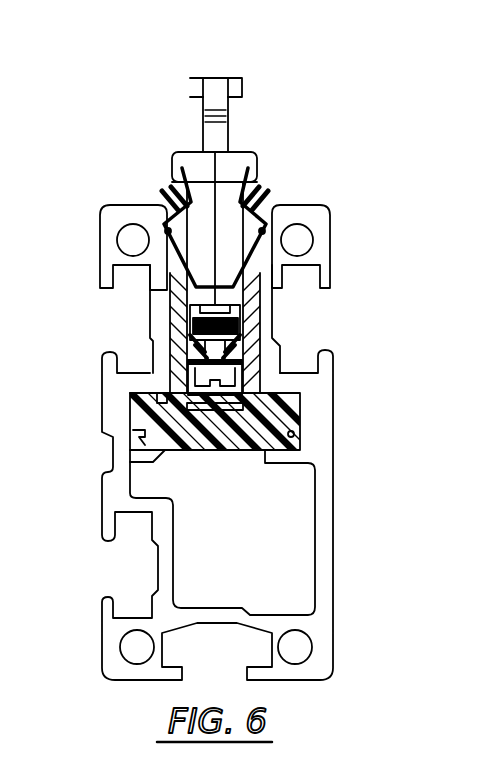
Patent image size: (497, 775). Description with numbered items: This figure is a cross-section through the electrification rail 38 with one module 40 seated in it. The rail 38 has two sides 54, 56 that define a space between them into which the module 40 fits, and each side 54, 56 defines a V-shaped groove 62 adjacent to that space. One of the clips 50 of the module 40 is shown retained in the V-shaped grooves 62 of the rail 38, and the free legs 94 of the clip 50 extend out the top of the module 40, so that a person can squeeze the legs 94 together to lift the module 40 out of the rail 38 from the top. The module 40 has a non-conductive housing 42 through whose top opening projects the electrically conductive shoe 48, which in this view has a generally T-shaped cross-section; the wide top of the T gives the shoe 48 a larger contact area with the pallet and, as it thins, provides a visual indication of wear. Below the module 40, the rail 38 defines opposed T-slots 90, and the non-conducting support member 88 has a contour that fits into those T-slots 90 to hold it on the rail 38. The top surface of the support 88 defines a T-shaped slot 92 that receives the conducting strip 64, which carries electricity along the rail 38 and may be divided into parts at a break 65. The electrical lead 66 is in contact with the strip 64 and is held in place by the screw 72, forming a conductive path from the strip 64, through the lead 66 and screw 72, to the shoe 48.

The electrification rail 38 is at (333, 363).
The module 40 is at (172, 107).
The housing 42 is at (170, 296).
The shoe 48 is at (228, 117).
The clip 50 is at (262, 266).
The side 54 is at (102, 268).
The side 56 is at (330, 218).
The V-shaped groove 62 is at (143, 238).
The conducting strip 64 is at (233, 415).
The break 65 is at (220, 78).
The lead 66 is at (205, 386).
The screw 72 is at (238, 372).
The support member 88 is at (200, 462).
The T-slot 90 is at (142, 435).
The T-shaped slot 92 is at (190, 405).
The free leg 94 is at (187, 177).